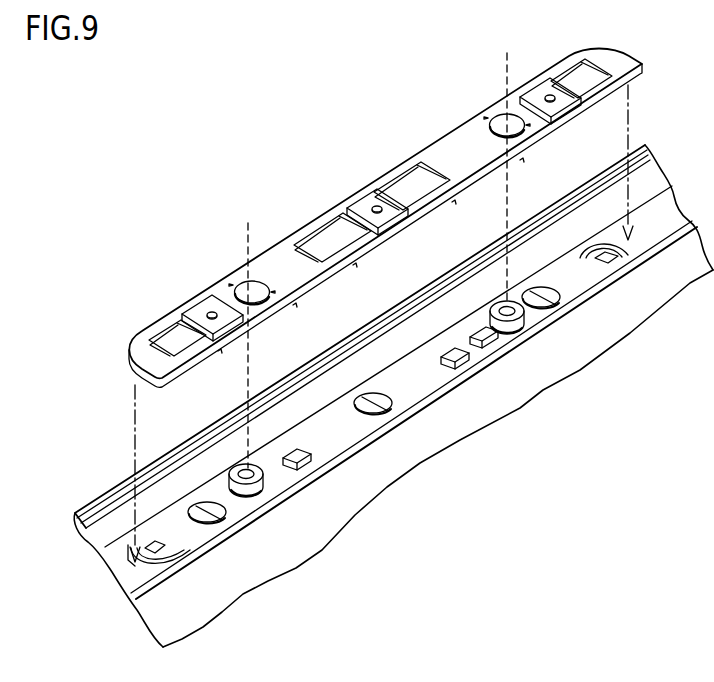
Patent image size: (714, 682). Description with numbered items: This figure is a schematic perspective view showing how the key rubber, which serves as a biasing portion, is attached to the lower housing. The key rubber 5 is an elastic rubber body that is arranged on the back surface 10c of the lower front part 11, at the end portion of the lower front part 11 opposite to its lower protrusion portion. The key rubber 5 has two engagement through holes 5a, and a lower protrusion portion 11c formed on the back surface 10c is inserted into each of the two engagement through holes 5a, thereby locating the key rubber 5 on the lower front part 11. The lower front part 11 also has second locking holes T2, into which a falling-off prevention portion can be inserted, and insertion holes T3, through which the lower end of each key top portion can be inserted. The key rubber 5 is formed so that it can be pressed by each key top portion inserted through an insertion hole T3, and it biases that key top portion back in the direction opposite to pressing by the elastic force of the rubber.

The key rubber (biasing portion) 5 is at (283, 267).
The engagement through hole 5a is at (254, 292).
The back surface 10c is at (393, 393).
The lower front part 11 is at (111, 524).
The lower protrusion portion 11c is at (245, 497).
The second locking hole T2 is at (170, 563).
The insertion hole T3 is at (213, 522).